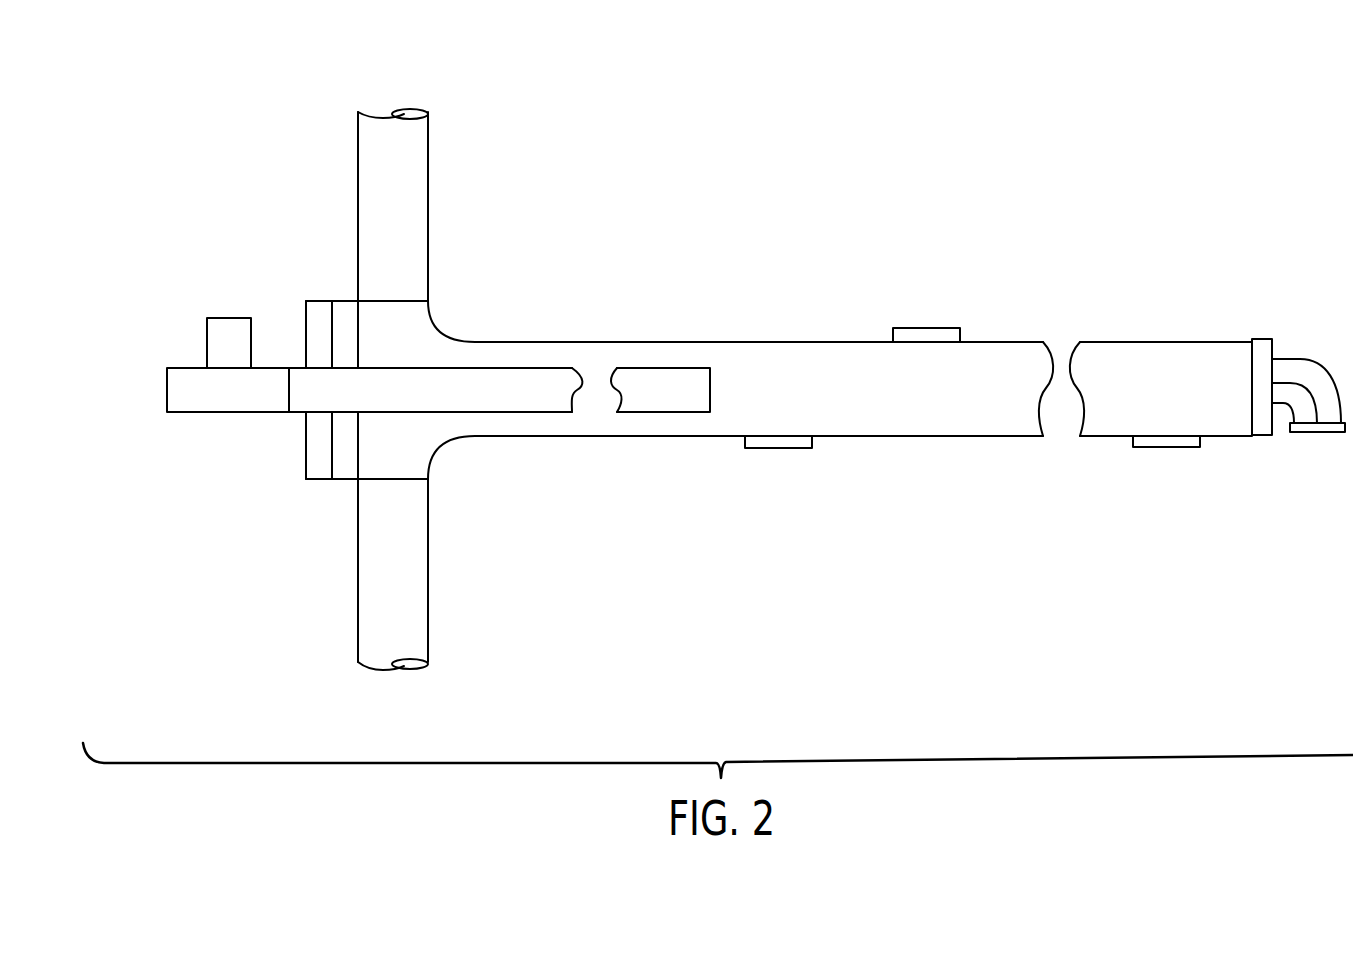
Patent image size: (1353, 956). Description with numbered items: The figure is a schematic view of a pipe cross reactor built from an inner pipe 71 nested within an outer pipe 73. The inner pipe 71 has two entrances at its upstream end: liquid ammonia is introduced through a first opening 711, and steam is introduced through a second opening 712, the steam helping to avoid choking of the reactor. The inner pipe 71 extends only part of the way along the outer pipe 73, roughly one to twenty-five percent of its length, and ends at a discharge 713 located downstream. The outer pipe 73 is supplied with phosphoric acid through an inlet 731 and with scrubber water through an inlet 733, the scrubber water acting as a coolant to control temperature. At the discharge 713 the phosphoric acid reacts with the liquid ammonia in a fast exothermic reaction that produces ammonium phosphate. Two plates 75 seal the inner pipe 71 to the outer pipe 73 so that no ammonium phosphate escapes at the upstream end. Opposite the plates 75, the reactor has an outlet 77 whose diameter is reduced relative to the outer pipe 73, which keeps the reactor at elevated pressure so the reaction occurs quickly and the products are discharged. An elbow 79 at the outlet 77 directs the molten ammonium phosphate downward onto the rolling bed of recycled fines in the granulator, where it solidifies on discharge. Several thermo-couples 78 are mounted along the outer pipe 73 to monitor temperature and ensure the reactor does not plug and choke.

The inner pipe 71 is at (540, 413).
The first opening 711 is at (166, 390).
The second opening 712 is at (228, 318).
The discharge 713 is at (712, 388).
The outer pipe 73 is at (540, 340).
The inlet 731 is at (377, 110).
The inlet 733 is at (410, 672).
The plates 75 is at (346, 301).
The outlet 77 is at (1262, 337).
The thermo-couples 78 is at (927, 326).
The elbow 79 is at (1310, 358).